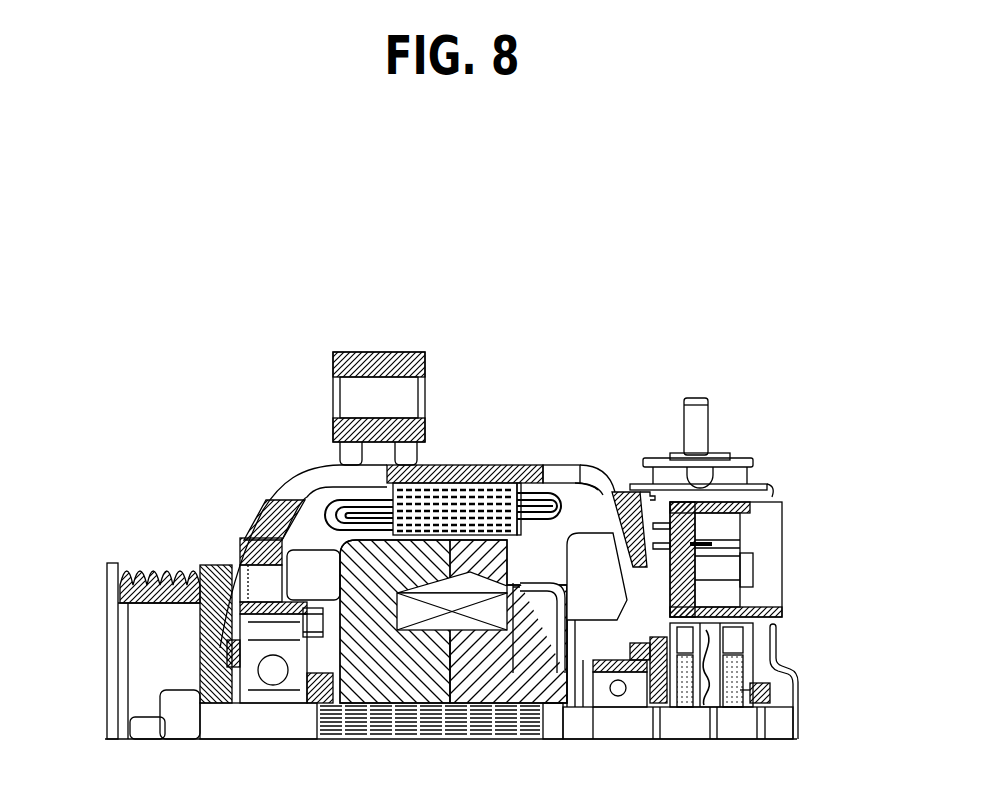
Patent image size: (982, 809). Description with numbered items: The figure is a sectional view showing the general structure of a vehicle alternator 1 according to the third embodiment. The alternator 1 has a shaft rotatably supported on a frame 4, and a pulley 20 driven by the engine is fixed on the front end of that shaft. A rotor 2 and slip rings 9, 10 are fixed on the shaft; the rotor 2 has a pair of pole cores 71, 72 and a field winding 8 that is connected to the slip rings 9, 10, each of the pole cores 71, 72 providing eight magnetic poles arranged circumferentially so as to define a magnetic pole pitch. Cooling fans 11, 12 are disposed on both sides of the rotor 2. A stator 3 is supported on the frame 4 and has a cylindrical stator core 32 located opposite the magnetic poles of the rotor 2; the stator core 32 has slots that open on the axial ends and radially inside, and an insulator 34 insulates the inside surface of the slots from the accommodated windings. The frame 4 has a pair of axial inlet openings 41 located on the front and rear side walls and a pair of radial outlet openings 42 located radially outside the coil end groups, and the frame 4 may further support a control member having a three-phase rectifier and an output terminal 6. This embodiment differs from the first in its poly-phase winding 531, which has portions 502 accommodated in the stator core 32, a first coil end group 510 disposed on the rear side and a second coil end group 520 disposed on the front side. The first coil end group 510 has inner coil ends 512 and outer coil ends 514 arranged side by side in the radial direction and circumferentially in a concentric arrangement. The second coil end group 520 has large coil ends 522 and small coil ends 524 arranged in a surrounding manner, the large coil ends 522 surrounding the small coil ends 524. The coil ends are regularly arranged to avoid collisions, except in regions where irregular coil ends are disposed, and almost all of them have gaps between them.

The alternator 1 is at (693, 320).
The rotor 2 is at (302, 534).
The stator 3 is at (573, 485).
The frame 4 is at (450, 503).
The output terminal 6 is at (703, 422).
The field winding 8 is at (457, 597).
The slip ring 9 is at (745, 722).
The slip ring 10 is at (690, 723).
The cooling fan 11 is at (257, 590).
The cooling fan 12 is at (603, 592).
The pulley 20 is at (118, 603).
The stator core 32 is at (433, 487).
The insulator 34 is at (328, 463).
The axial inlet opening 41 is at (240, 625).
The radial outlet opening 42 is at (297, 485).
The pole core 71 is at (482, 658).
The pole core 72 is at (265, 557).
The portions 502 is at (430, 490).
The first coil end group 510 is at (546, 498).
The inner coil end 512 is at (603, 468).
The outer coil end 514 is at (567, 492).
The second coil end group 520 is at (340, 503).
The large coil end 522 is at (333, 498).
The small coil end 524 is at (290, 513).
The poly-phase winding 531 is at (571, 498).